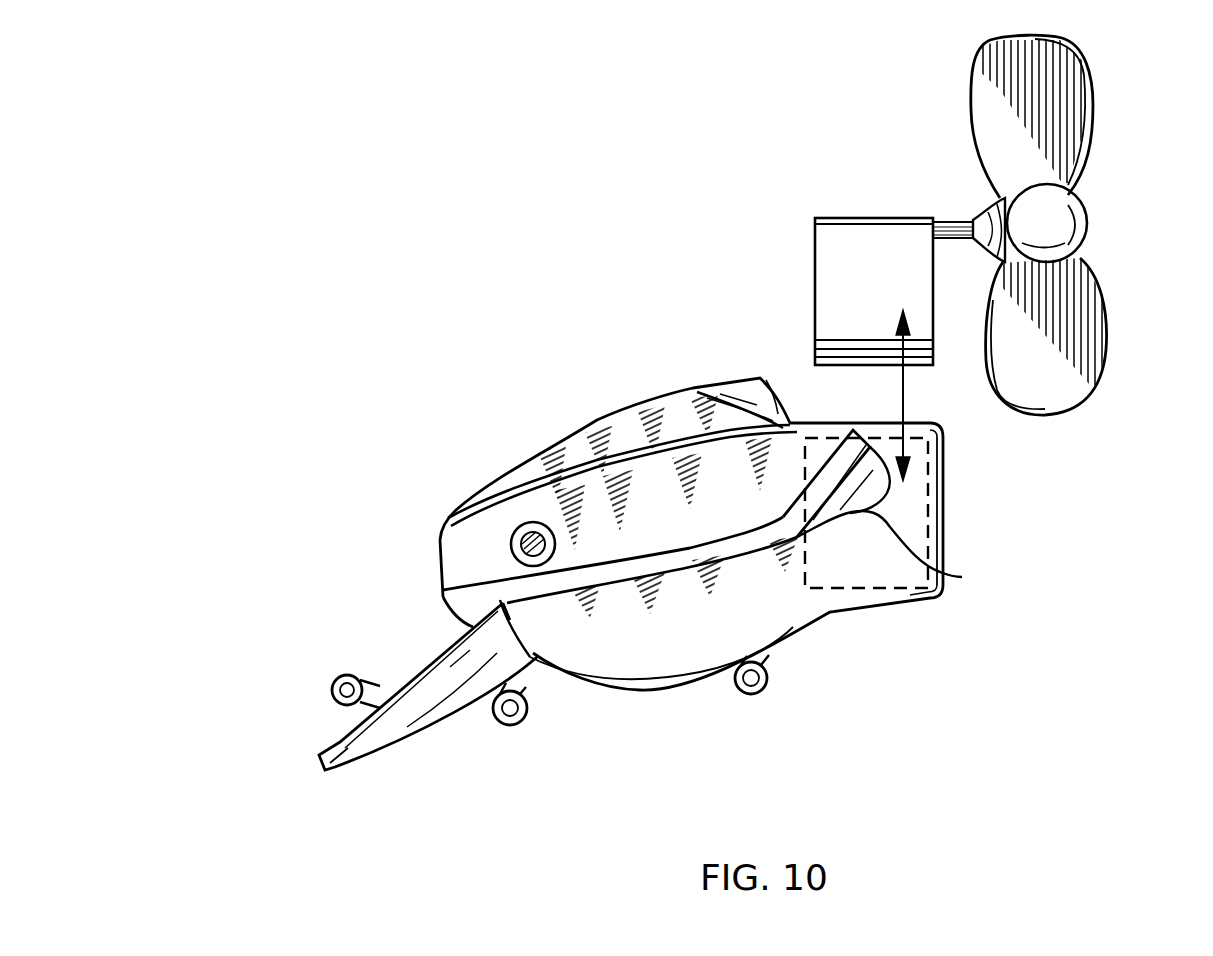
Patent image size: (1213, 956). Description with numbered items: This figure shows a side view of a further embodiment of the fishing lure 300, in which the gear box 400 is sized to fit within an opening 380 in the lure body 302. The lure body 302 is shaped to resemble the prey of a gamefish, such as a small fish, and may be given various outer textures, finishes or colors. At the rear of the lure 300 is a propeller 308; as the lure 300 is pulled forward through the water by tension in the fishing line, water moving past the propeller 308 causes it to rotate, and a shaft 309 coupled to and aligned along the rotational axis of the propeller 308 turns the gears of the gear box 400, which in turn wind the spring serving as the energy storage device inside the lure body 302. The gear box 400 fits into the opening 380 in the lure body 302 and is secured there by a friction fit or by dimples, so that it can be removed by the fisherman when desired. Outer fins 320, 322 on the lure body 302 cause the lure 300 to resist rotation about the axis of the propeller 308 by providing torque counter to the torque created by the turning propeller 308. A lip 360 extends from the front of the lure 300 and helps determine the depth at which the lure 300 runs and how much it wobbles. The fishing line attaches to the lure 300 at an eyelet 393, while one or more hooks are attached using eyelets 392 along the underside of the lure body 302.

The fishing lure 300 is at (569, 200).
The lure body 302 is at (828, 620).
The propeller 308 is at (1097, 108).
The shaft 309 is at (963, 218).
The outer fin 320 is at (628, 405).
The outer fin 322 is at (945, 576).
The lip 360 is at (318, 758).
The opening 380 is at (955, 515).
The eyelets 392 is at (527, 708).
The eyelet 393 is at (337, 688).
The gear box 400 is at (812, 270).